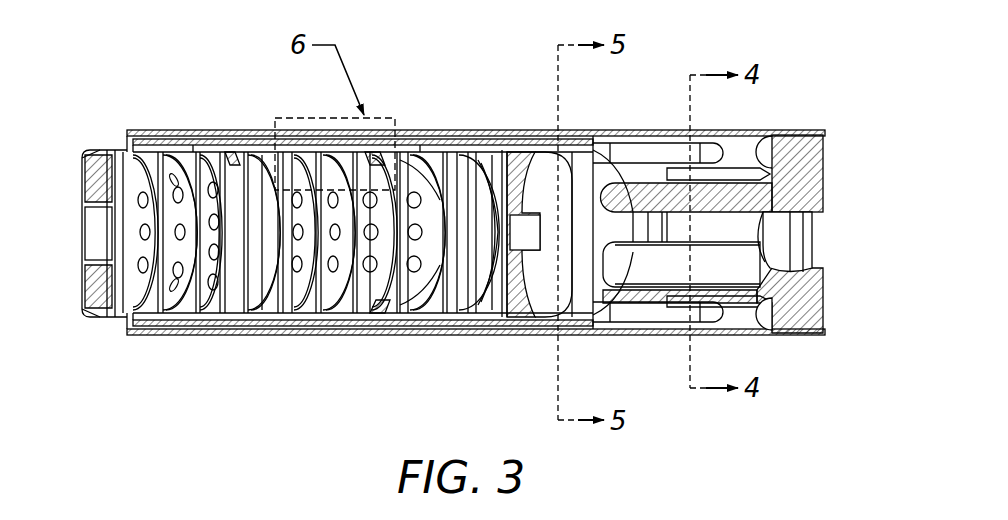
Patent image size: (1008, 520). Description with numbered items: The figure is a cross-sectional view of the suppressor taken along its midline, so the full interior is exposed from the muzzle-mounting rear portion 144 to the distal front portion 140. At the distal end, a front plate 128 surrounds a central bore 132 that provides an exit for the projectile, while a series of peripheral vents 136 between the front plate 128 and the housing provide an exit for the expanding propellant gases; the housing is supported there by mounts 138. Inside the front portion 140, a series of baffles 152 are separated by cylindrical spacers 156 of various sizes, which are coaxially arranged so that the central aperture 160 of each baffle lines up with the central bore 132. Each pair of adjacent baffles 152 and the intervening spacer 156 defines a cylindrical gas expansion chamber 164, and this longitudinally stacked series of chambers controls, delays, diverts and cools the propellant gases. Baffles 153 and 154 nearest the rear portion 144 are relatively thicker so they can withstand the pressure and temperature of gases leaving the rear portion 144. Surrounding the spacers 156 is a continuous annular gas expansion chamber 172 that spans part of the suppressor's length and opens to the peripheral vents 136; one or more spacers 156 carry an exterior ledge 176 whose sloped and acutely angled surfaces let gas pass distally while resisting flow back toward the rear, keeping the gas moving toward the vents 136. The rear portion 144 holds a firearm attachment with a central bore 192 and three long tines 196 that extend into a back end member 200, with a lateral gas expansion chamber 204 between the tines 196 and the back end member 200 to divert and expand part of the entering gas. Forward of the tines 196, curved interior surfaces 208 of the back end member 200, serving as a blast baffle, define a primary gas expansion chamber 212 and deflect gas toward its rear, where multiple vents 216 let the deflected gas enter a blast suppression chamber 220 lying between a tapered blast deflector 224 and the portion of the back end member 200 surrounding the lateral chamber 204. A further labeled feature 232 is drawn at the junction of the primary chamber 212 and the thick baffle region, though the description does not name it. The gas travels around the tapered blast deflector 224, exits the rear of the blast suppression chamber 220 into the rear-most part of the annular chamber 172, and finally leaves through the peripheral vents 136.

The front plate 128 is at (118, 298).
The central bore 132 is at (100, 238).
The peripheral vents 136 is at (125, 142).
The mounts 138 is at (147, 139).
The front portion 140 is at (92, 385).
The rear portion 144 is at (838, 385).
The baffles 152 is at (260, 168).
The baffle 153 is at (418, 162).
The baffle 154 is at (478, 150).
The cylindrical spacers 156 is at (333, 150).
The central aperture 160 is at (150, 262).
The cylindrical gas expansion chamber 164 is at (262, 300).
The annular gas expansion chamber 172 is at (193, 142).
The exterior ledge 176 is at (230, 150).
The central bore 192 is at (793, 237).
The long tines 196 is at (705, 264).
The back end member 200 is at (758, 222).
The lateral gas expansion chamber 204 is at (763, 136).
The curved interior surfaces 208 is at (523, 318).
The primary gas expansion chamber 212 is at (552, 180).
The vents 216 is at (593, 142).
The blast suppression chamber 220 is at (663, 143).
The tapered blast deflector 224 is at (768, 172).
The opening 232 is at (518, 228).